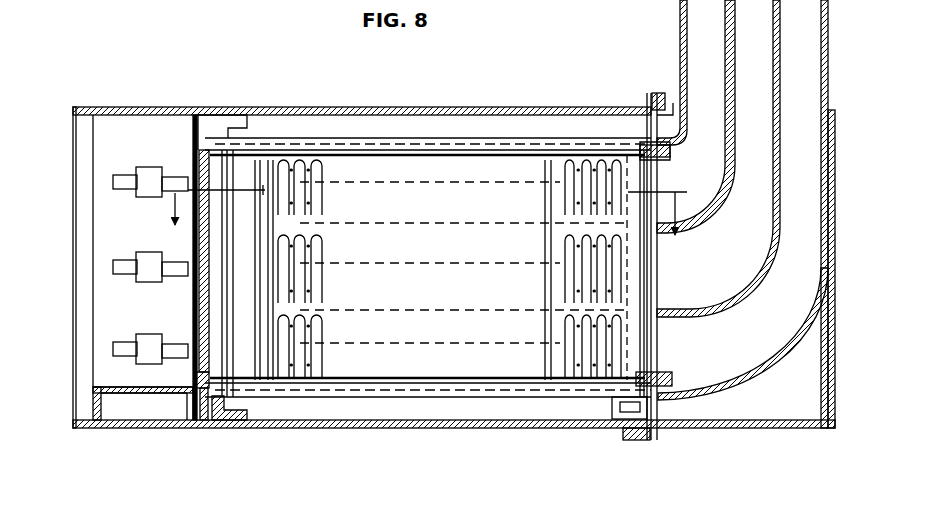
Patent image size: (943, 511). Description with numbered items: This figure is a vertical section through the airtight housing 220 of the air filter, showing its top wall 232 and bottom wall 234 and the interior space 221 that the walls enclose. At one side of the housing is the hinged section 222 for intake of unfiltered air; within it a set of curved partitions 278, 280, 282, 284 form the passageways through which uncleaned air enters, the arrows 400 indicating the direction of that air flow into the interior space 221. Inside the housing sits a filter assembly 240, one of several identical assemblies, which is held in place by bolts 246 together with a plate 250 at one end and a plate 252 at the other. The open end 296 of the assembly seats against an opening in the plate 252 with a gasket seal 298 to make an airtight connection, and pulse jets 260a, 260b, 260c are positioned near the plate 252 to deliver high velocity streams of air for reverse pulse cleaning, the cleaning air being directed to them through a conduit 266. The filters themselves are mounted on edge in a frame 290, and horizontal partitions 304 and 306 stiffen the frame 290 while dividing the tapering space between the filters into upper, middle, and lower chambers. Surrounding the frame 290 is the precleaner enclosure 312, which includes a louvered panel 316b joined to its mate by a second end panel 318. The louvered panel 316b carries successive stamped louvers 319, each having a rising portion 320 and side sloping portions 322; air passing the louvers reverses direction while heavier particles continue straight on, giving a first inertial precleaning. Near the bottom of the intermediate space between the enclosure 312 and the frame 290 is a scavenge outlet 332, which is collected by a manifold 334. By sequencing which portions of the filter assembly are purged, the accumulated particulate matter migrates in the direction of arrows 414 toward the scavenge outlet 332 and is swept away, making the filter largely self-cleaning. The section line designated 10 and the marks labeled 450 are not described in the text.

The section line 10 is at (425, 229).
The airtight housing 220 is at (427, 103).
The interior space 221 is at (514, 131).
The hinged section 222 is at (678, 14).
The top wall 232 is at (354, 107).
The bottom wall 234 is at (407, 430).
The filter assembly 240 is at (473, 297).
The bolts 246 is at (485, 157).
The plate 250 is at (653, 142).
The plate 252 is at (170, 131).
The pulse jet 260a is at (152, 162).
The pulse jet 260b is at (150, 255).
The pulse jet 260c is at (149, 334).
The conduit 266 is at (110, 122).
The partition 278 is at (679, 42).
The partition 280 is at (724, 35).
The partition 282 is at (771, 52).
The partition 284 is at (820, 56).
The frame 290 is at (461, 140).
The open end 296 is at (233, 292).
The gasket seal 298 is at (238, 136).
The horizontal partition 304 is at (480, 227).
The horizontal partition 306 is at (465, 313).
The precleaner enclosure 312 is at (363, 170).
The louvered panel 316b is at (520, 370).
The second end panel 318 is at (647, 290).
The louvers 319 is at (507, 160).
The rising portion 320 is at (327, 272).
The side sloping portions 322 is at (325, 235).
The scavenge outlet 332 is at (627, 413).
The manifold 334 is at (607, 407).
The arrows 400 is at (695, 165).
The arrows 414 is at (338, 175).
The thermocouples 450 is at (132, 192).